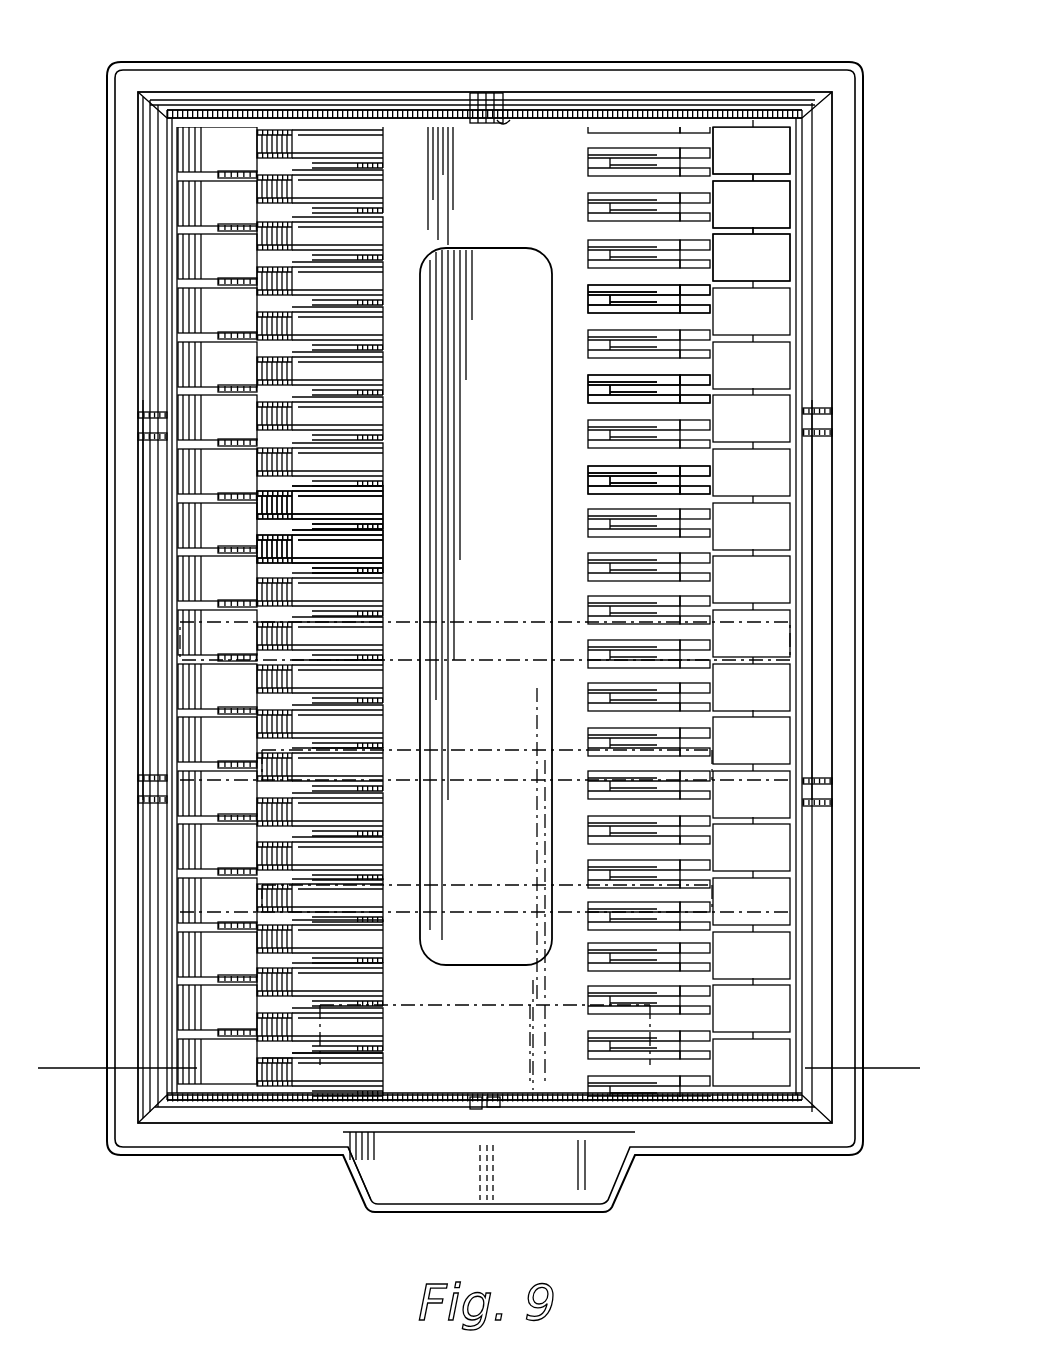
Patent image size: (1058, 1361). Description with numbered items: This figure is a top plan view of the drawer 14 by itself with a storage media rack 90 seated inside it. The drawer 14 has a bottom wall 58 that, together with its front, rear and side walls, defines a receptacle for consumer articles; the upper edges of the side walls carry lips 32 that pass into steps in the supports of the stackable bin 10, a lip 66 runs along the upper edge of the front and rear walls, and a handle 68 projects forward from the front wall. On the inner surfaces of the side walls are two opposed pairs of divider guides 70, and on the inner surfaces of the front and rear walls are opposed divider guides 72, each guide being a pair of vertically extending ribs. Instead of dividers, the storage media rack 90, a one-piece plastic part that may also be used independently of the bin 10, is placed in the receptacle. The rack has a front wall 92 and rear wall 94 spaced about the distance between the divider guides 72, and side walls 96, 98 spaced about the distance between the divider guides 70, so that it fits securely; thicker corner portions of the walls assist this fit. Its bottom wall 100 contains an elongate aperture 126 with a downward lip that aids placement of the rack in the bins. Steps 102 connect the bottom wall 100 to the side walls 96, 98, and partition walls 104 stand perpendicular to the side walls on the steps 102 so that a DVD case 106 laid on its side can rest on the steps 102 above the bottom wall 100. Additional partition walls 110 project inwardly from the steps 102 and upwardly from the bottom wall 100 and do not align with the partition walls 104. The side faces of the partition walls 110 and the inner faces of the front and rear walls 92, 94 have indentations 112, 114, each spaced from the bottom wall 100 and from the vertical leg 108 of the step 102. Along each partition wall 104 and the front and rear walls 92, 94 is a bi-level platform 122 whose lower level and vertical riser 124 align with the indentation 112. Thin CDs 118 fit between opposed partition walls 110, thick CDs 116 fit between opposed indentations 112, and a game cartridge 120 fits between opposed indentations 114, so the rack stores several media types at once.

The stackable bin 10 is at (913, 995).
The drawer 14 is at (368, 56).
The lips 32 is at (118, 495).
The bottom wall 58 is at (510, 380).
The lip 66 is at (665, 78).
The handle 68 is at (612, 1205).
The divider guides 70 is at (152, 415).
The divider guide 72 is at (500, 120).
The storage media rack 90 is at (388, 113).
The front wall 92 is at (330, 1098).
The rear wall 94 is at (565, 125).
The side wall 96 is at (167, 700).
The side wall 98 is at (800, 692).
The bottom wall 100 is at (512, 210).
The steps 102 is at (735, 208).
The partition walls 104 is at (763, 232).
The vertical leg 108 is at (712, 317).
The partition walls 110 is at (595, 392).
The indentations 112 is at (596, 489).
The indentations 114 is at (357, 567).
The DVD case 106 is at (540, 618).
The thick CD 116 is at (470, 750).
The thin CD 118 is at (505, 882).
The game cartridge 120 is at (475, 1003).
The bi-level platform 122 is at (273, 1058).
The vertical riser 124 is at (300, 1058).
The elongate aperture 126 is at (360, 1192).